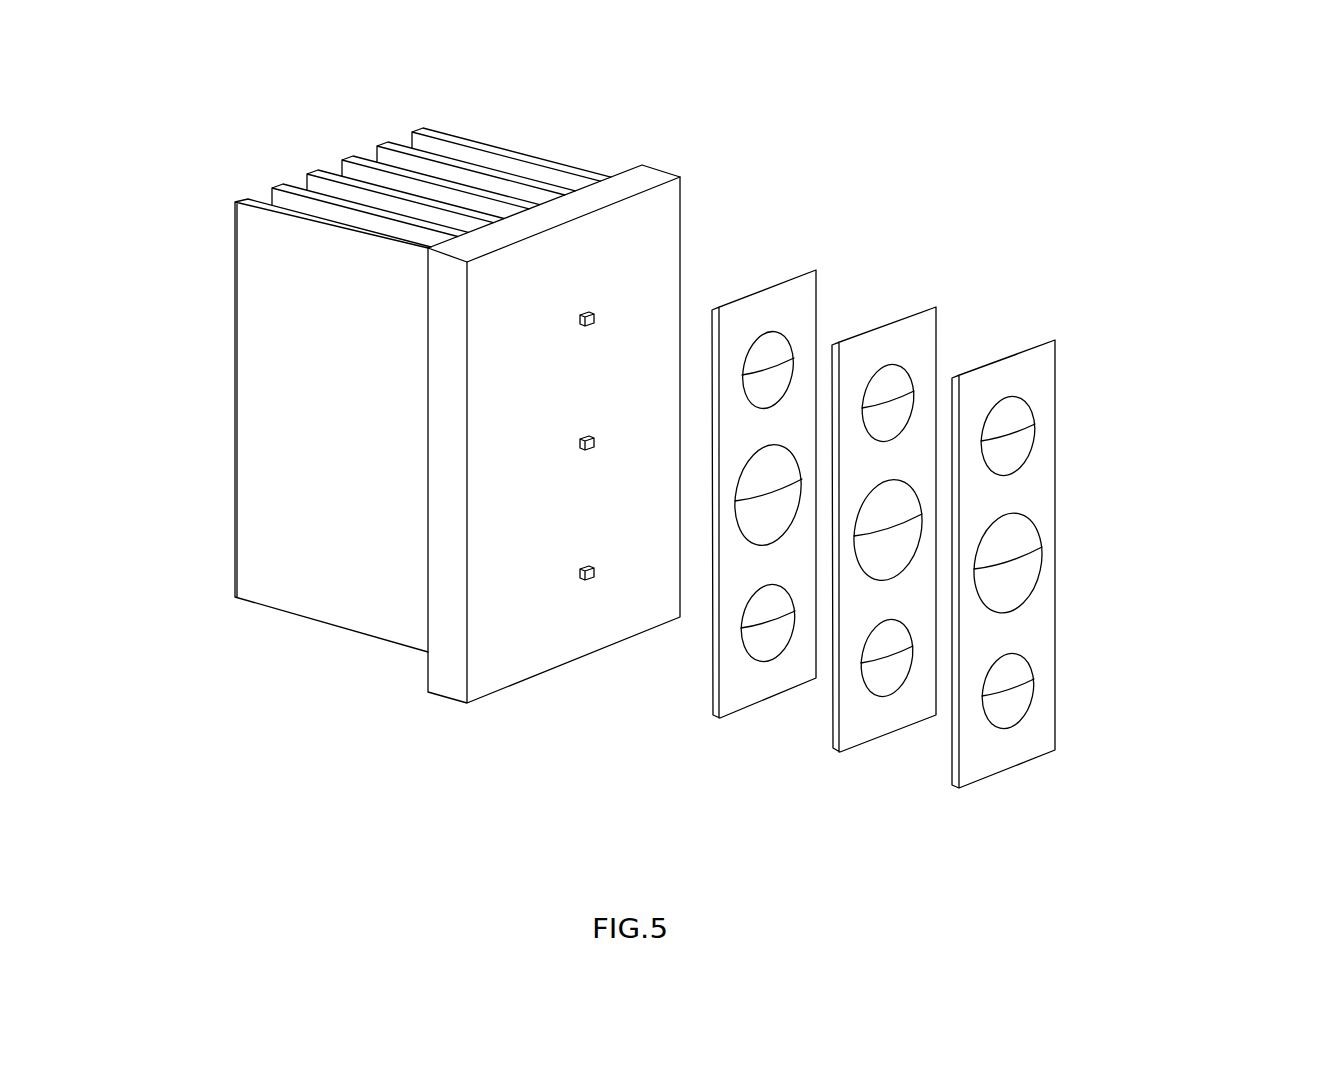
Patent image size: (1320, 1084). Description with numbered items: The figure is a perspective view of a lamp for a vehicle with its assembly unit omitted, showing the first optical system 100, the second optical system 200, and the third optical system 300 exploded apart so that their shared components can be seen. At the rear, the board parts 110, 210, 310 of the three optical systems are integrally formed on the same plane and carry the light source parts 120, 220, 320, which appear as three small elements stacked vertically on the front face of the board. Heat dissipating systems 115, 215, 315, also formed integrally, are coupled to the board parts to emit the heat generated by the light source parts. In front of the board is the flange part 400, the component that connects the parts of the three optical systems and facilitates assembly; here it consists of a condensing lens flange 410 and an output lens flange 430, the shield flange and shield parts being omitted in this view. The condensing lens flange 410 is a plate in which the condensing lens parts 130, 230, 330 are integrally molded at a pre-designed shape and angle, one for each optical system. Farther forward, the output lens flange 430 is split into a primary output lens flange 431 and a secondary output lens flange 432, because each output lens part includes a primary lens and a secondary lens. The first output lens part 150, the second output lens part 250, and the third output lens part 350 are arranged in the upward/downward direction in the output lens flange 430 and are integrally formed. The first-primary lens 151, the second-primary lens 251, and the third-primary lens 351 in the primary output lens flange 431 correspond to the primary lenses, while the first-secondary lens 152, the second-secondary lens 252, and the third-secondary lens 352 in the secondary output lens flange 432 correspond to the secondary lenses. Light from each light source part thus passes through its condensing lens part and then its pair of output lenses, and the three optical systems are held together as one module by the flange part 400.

The first optical system 100 is at (698, 778).
The board part 110 is at (642, 178).
The heat dissipating system 115 is at (445, 178).
The light source part 120 is at (580, 571).
The condensing lens part 130 is at (762, 648).
The first output lens part 150 is at (853, 810).
The (1-1)-th lens 151 is at (885, 682).
The (1-2)-th lens 152 is at (1018, 672).
The second optical system 200 is at (610, 706).
The board part 210 is at (554, 382).
The heat dissipating system 215 is at (423, 356).
The light source part 220 is at (580, 441).
The condensing lens part 230 is at (750, 522).
The second output lens part 250 is at (1150, 464).
The (2-1)-th lens 251 is at (903, 510).
The (2-2)-th lens 252 is at (1020, 534).
The third optical system 300 is at (714, 238).
The board part 310 is at (573, 382).
The heat dissipating system 315 is at (423, 356).
The light source part 320 is at (580, 317).
The condensing lens part 330 is at (762, 357).
The third output lens part 350 is at (849, 253).
The (3-1)-th lens 351 is at (882, 388).
The (3-2)-th lens 352 is at (1003, 428).
The flange part 400 is at (240, 730).
The condensing lens flange 410 is at (768, 303).
The output lens flange 430 is at (1060, 240).
The primary output lens flange 431 is at (902, 333).
The secondary output lens flange 432 is at (1020, 368).